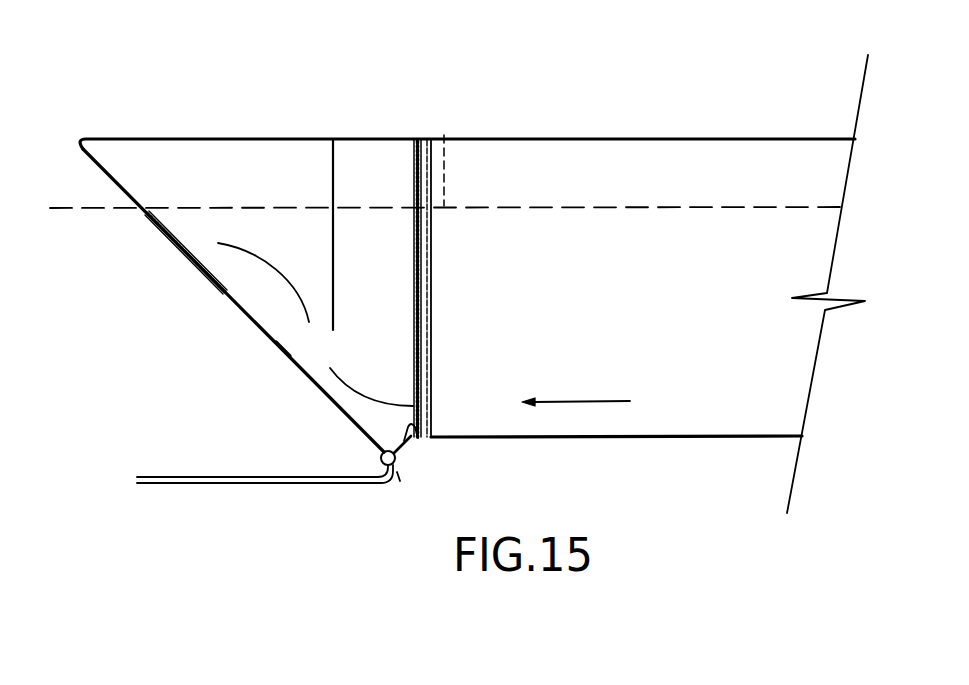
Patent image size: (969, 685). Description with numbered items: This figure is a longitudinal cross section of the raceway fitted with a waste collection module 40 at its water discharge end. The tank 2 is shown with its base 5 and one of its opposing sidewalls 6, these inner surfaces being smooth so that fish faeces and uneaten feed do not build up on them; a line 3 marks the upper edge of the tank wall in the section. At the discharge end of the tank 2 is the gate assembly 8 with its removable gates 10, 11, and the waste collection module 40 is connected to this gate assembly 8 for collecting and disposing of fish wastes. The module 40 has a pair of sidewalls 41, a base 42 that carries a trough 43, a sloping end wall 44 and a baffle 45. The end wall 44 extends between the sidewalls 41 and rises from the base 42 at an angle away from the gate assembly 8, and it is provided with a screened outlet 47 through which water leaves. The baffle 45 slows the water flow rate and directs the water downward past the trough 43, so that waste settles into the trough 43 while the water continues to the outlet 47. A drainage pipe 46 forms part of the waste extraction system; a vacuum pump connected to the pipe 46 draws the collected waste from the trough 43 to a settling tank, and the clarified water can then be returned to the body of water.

The tank 2 is at (642, 343).
The upper wall 3 is at (598, 153).
The base 5 is at (713, 440).
The sidewalls 6 is at (823, 215).
The gate assembly 8 is at (434, 237).
The removable gate 10 is at (414, 193).
The removable gate 11 is at (428, 168).
The waste collection module 40 is at (281, 517).
The sidewalls 41 is at (258, 287).
The base 42 is at (418, 440).
The trough 43 is at (393, 445).
The sloping end wall 44 is at (280, 348).
The baffle 45 is at (333, 190).
The drainage pipe 46 is at (373, 470).
The screened outlet 47 is at (180, 245).